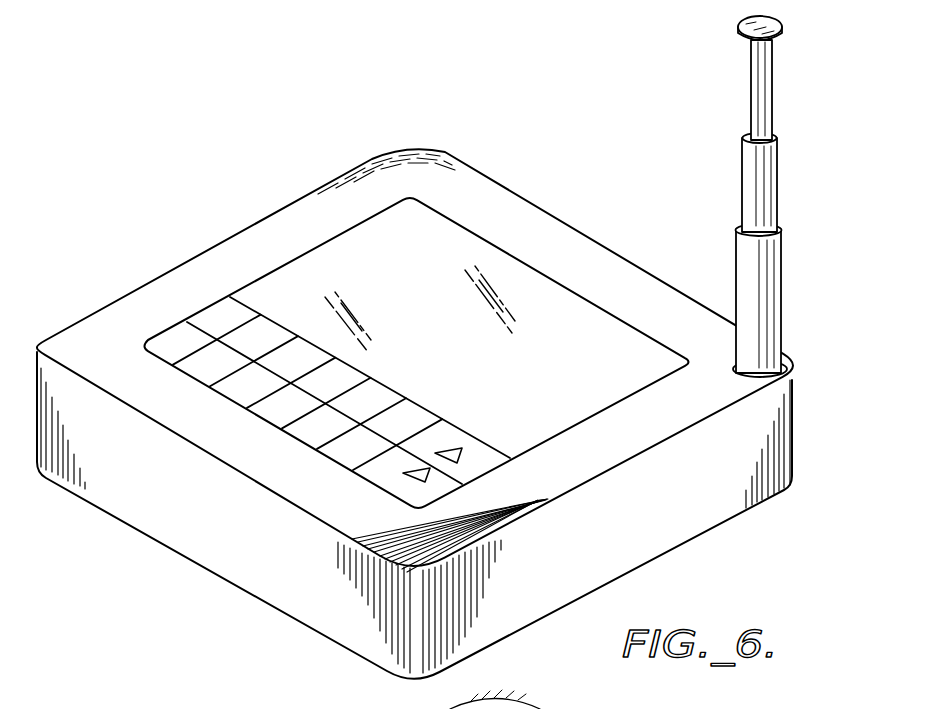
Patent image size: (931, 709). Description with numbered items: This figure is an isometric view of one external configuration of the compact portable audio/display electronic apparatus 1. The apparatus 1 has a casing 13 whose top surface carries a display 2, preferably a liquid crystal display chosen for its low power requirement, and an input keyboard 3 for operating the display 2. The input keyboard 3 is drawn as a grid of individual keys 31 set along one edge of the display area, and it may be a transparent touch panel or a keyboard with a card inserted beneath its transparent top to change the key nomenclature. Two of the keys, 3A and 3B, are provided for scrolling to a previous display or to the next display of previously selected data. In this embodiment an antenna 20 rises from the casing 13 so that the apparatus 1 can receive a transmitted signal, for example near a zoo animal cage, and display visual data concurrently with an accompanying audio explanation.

The compact portable audio/display electronic apparatus 1 is at (191, 158).
The display 2 is at (333, 257).
The input keyboard 3 is at (305, 381).
The keys 31 is at (273, 417).
The key 3A is at (445, 433).
The key 3B is at (387, 470).
The casing 13 is at (698, 510).
The antenna 20 is at (747, 276).